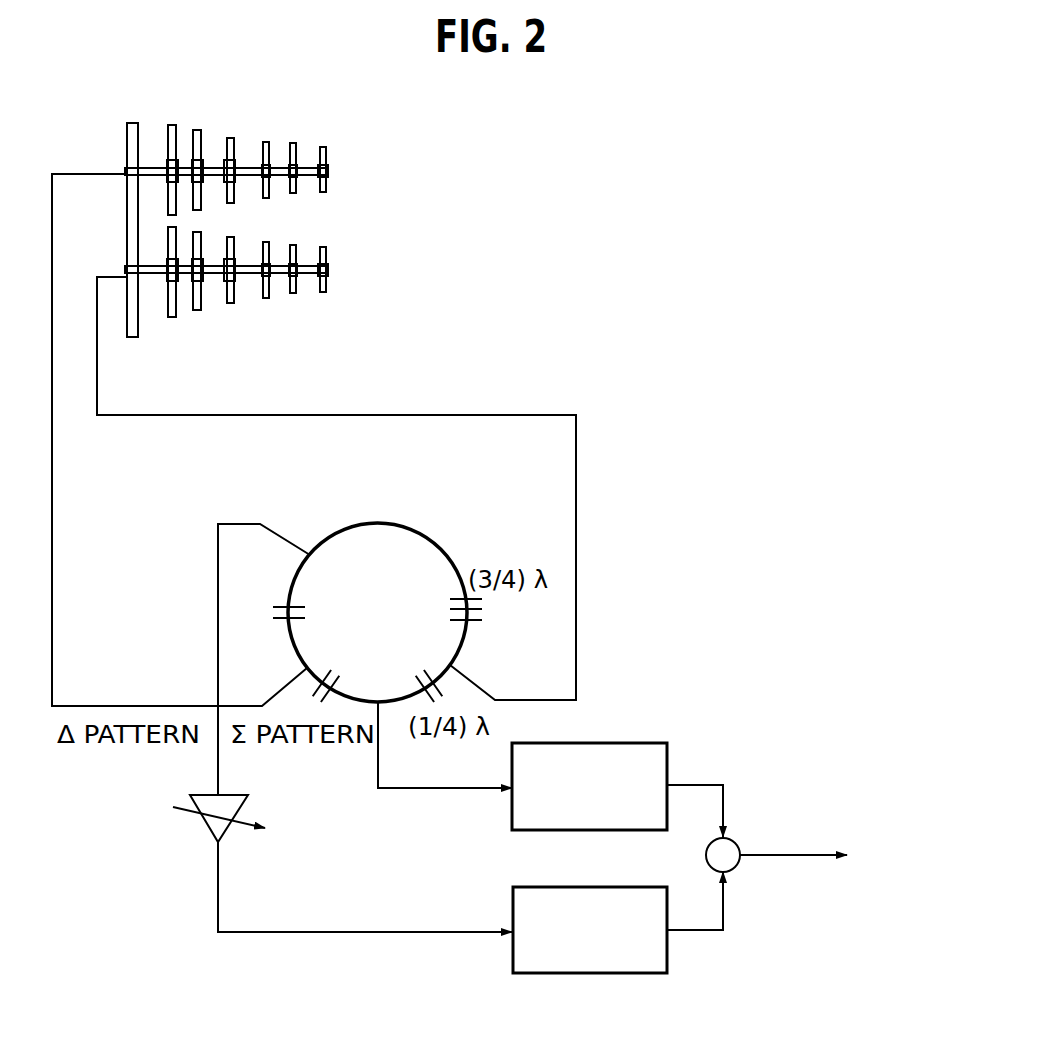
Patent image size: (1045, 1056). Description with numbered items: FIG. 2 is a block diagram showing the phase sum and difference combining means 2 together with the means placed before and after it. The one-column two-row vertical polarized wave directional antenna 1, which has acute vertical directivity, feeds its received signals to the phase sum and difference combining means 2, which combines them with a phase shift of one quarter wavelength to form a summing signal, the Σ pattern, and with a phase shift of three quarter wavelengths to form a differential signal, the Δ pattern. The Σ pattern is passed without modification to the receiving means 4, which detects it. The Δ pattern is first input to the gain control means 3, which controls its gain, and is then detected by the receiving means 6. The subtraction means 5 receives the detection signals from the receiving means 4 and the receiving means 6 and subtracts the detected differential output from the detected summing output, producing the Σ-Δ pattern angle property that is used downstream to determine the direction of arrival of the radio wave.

The one-column two-row vertical polarized wave directional antenna 1 is at (139, 337).
The phase sum and difference combining means 2 is at (311, 551).
The gain control means 3 is at (223, 830).
The receiving means 4 is at (637, 830).
The subtraction means 5 is at (733, 838).
The receiving means 6 is at (595, 973).